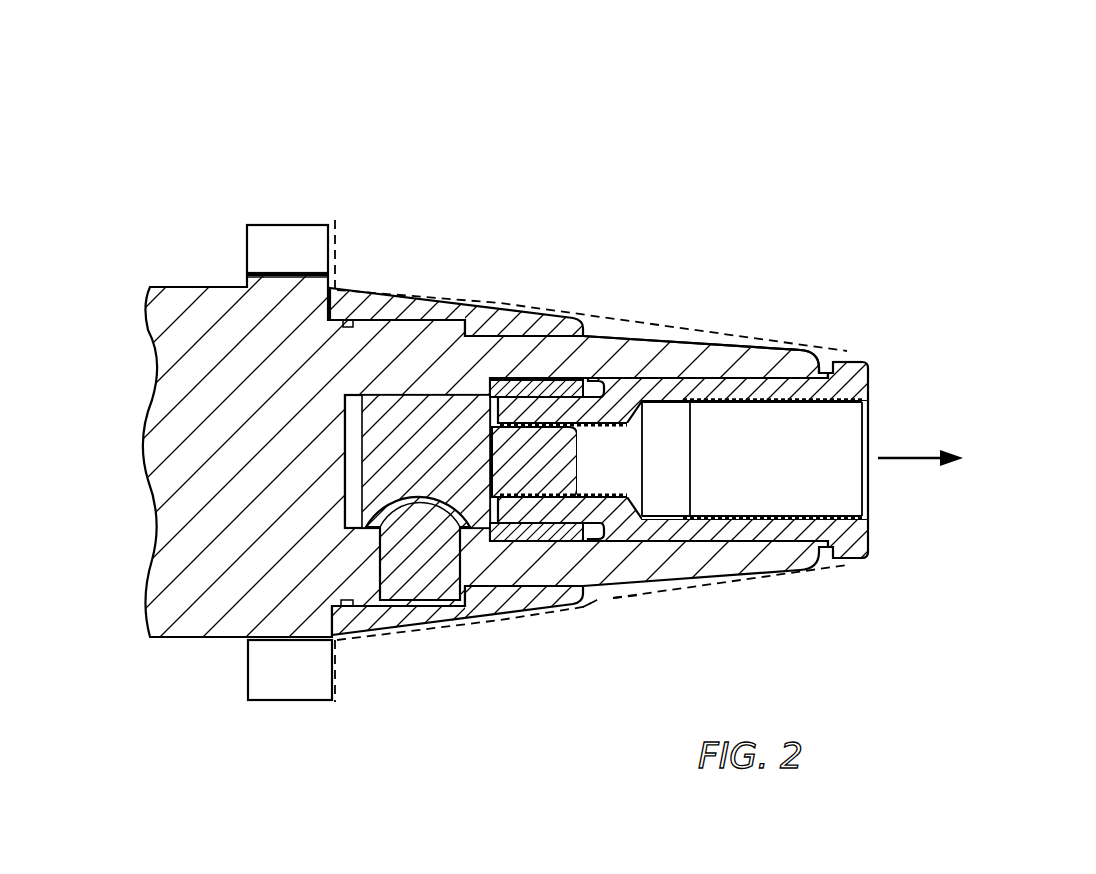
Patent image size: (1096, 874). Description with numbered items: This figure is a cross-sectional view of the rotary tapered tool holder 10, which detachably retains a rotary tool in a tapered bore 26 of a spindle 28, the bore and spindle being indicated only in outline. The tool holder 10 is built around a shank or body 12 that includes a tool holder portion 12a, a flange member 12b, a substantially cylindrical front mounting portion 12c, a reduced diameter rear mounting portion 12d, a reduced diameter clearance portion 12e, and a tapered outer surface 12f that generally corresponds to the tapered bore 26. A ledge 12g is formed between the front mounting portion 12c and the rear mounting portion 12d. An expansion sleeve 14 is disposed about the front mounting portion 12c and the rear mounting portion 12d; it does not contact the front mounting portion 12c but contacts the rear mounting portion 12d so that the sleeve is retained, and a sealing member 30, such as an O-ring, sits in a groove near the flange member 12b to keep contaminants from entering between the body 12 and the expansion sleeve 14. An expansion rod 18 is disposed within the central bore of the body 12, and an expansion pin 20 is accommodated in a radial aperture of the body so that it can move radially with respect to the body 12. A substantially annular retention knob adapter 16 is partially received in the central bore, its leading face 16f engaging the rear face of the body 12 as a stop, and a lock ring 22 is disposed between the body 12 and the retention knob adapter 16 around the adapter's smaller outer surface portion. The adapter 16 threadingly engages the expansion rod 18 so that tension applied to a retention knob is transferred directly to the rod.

The rotary tapered tool holder 10 is at (856, 236).
The body 12 is at (175, 278).
The tool holder portion 12a is at (200, 285).
The flange member 12b is at (290, 225).
The front mounting portion 12c is at (385, 318).
The rear mounting portion 12d is at (533, 381).
The clearance portion 12e is at (623, 337).
The tapered outer surface 12f is at (806, 348).
The ledge 12g is at (836, 369).
The expansion sleeve 14 is at (413, 290).
The retention knob adapter 16 is at (713, 377).
The leading face 16f is at (866, 373).
The expansion rod 18 is at (429, 400).
The expansion pin 20 is at (422, 602).
The lock ring 22 is at (550, 381).
The tapered bore 26 is at (597, 600).
The spindle 28 is at (640, 630).
The sealing member 30 is at (346, 318).